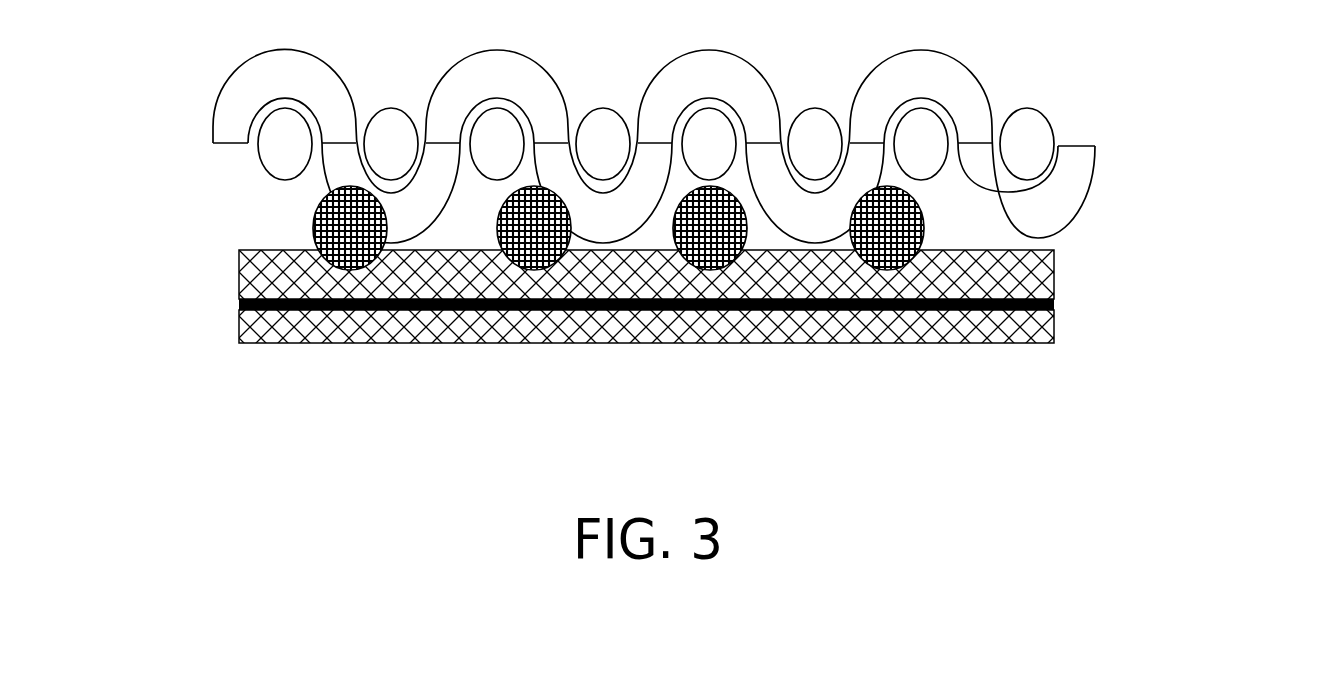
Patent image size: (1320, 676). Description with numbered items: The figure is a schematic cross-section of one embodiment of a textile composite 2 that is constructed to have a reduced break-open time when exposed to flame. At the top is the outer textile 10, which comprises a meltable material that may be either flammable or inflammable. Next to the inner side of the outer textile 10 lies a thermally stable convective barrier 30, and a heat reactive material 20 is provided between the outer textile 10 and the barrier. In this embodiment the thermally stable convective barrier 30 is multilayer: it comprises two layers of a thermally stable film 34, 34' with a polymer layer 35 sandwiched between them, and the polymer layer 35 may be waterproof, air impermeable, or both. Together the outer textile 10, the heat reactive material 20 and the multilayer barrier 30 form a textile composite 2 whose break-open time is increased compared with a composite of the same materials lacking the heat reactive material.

The textile composite 2 is at (688, 233).
The outer textile 10 is at (1095, 150).
The heat reactive material 20 is at (713, 232).
The thermally stable convective barrier 30 is at (601, 293).
The thermally stable film 34 is at (563, 255).
The polymer layer 35 is at (239, 306).
The thermally stable film 34' is at (563, 342).